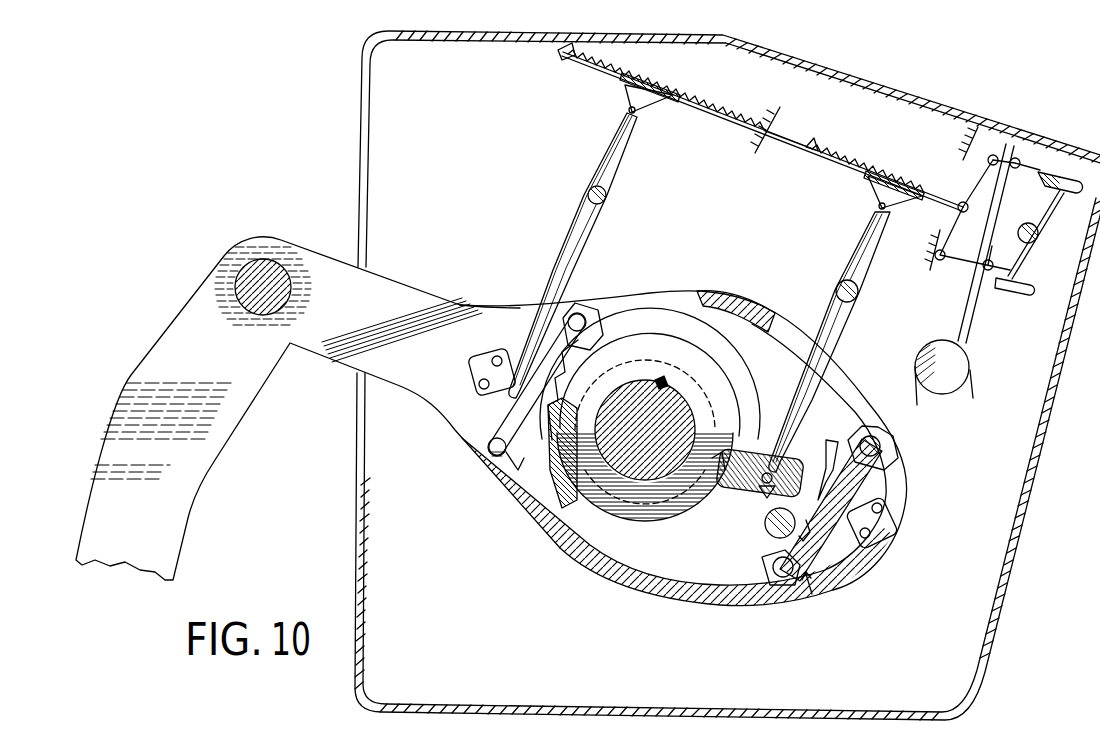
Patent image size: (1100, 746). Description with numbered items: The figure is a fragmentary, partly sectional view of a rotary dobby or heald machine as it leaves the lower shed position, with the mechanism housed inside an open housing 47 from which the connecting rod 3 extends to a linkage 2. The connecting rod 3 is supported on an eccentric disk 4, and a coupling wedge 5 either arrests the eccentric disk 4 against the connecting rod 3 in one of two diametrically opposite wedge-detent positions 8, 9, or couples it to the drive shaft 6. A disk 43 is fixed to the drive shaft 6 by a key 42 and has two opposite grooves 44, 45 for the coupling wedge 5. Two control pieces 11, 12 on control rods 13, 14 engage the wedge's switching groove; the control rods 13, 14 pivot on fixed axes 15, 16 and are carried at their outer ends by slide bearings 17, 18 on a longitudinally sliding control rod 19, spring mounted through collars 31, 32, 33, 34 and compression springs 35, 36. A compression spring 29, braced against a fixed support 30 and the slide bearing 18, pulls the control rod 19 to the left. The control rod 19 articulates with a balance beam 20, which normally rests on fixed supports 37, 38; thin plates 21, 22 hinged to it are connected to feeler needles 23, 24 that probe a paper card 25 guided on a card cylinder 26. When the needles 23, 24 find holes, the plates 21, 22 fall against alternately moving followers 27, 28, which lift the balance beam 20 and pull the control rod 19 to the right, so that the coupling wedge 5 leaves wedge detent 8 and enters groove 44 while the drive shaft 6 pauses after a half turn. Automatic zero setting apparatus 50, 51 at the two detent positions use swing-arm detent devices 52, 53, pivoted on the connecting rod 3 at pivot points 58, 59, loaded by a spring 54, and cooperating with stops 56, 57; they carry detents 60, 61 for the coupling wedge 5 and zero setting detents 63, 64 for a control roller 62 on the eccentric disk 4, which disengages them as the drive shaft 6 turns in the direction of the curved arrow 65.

The linkage 2 is at (167, 357).
The connecting rod 3 is at (550, 537).
The eccentric disk 4 is at (616, 553).
The coupling wedge 5 is at (757, 455).
The drive shaft 6 is at (662, 436).
The wedge-detent position 8 is at (843, 490).
The wedge-detent position 9 is at (538, 378).
The control piece 11 is at (762, 490).
The control piece 12 is at (506, 398).
The control rod 13 is at (826, 331).
The control rod 14 is at (567, 259).
The fixed axis 15 is at (840, 283).
The fixed axis 16 is at (589, 193).
The slide bearing 17 is at (897, 169).
The slide bearing 18 is at (660, 87).
The control rod 19 is at (783, 143).
The balance beam 20 is at (968, 181).
The thin plate 21 is at (1040, 176).
The thin plate 22 is at (950, 259).
The feeler needle 23 is at (962, 311).
The feeler needle 24 is at (968, 349).
The paper card 25 is at (975, 393).
The card cylinder 26 is at (916, 369).
The follower 27 is at (1048, 249).
The follower 28 is at (1008, 294).
The compression spring 29 is at (730, 109).
The fixed support 30 is at (750, 149).
The collar 31 is at (903, 201).
The collar 32 is at (825, 149).
The collar 33 is at (648, 105).
The collar 34 is at (558, 57).
The compression spring 35 is at (846, 167).
The compression spring 36 is at (600, 83).
The fixed support 37 is at (927, 259).
The fixed support 38 is at (962, 144).
The key 42 is at (664, 380).
The disk 43 is at (661, 513).
The groove 44 is at (716, 481).
The groove 45 is at (589, 500).
The housing 47 is at (359, 498).
The automatic zero setting apparatus 50 is at (816, 593).
The automatic zero setting apparatus 51 is at (516, 311).
The detent device 52 is at (885, 449).
The detent device 53 is at (520, 461).
The spring 54 is at (856, 529).
The stop 56 is at (783, 583).
The stop 57 is at (581, 313).
The pivot point 58 is at (873, 430).
The pivot point 59 is at (488, 454).
The detent 60 is at (830, 462).
The detent 61 is at (534, 413).
The control element 62 is at (770, 530).
The zero setting detent 63 is at (808, 535).
The zero setting detent 64 is at (628, 330).
The curved arrow 65 is at (756, 392).